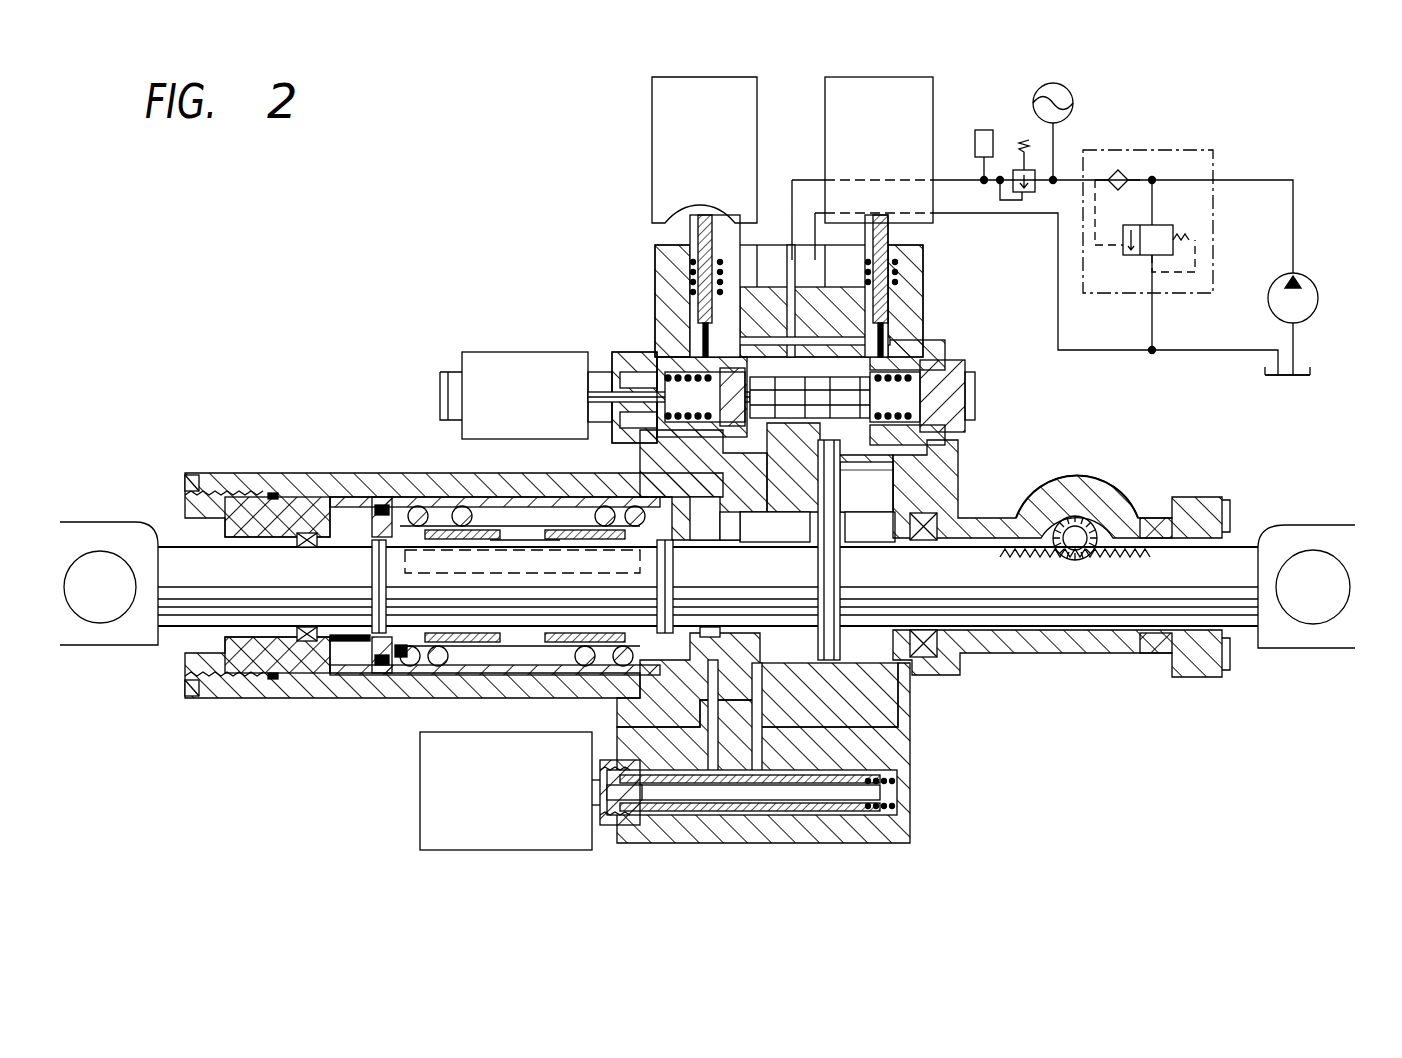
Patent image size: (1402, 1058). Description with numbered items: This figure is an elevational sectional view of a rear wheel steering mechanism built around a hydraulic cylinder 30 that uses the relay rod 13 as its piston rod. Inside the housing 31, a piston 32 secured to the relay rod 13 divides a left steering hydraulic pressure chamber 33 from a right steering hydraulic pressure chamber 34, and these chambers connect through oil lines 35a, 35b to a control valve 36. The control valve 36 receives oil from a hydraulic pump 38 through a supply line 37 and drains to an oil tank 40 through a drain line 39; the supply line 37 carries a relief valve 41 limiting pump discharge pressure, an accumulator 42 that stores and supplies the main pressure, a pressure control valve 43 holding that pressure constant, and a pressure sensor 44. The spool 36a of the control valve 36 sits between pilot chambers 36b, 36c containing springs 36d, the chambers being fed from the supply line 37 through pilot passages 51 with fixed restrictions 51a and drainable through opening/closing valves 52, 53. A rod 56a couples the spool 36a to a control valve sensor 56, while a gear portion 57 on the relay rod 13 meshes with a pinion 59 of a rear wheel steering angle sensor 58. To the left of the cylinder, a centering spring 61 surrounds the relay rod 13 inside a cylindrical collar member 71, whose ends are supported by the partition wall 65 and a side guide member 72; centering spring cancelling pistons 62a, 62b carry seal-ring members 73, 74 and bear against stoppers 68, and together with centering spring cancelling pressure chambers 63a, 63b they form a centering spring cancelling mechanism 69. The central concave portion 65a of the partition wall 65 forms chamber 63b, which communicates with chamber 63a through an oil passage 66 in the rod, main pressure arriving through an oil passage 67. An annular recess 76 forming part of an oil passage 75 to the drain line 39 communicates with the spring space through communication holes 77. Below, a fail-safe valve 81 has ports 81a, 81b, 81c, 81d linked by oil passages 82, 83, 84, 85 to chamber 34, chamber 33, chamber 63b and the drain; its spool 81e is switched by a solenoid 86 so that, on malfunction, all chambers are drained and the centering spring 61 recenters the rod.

The relay rod 13 is at (990, 640).
The hydraulic cylinder 30 is at (925, 680).
The housing 31 is at (985, 525).
The piston 32 is at (842, 560).
The left steering hydraulic pressure chamber 33 is at (775, 526).
The right steering hydraulic pressure chamber 34 is at (870, 526).
The oil line 35a is at (772, 492).
The oil line 35b is at (918, 468).
The control valve 36 is at (915, 355).
The spool 36a is at (935, 392).
The pilot chamber 36b is at (680, 357).
The pilot chamber 36c is at (960, 410).
The springs 36d is at (640, 340).
The supply line 37 is at (775, 255).
The hydraulic pump 38 is at (1313, 308).
The drain line 39 is at (808, 240).
The oil tank 40 is at (1298, 378).
The relief valve 41 is at (1150, 145).
The accumulator 42 is at (1072, 98).
The pressure control valve 43 is at (1030, 165).
The pressure sensor 44 is at (985, 140).
The pilot passages 51 is at (700, 230).
The fixed restrictions 51a is at (690, 310).
The opening/closing valve 52 is at (650, 192).
The opening/closing valve 53 is at (938, 105).
The control valve sensor 56 is at (488, 352).
The rod 56a is at (602, 372).
The gear portion 57 is at (1125, 515).
The rear wheel steering angle sensor 58 is at (1068, 500).
The pinion 59 is at (1080, 525).
The centering spring 61 is at (405, 500).
The centering spring cancelling piston 62a is at (430, 532).
The centering spring cancelling piston 62b is at (600, 535).
The centering spring cancelling pressure chamber 63a is at (365, 538).
The centering spring cancelling pressure chamber 63b is at (710, 540).
The partition wall 65 is at (770, 540).
The central concave portion 65a is at (718, 632).
The oil passage 66 is at (500, 680).
The oil passage 67 is at (820, 462).
The stoppers 68 is at (340, 680).
The centering spring cancelling mechanism 69 is at (385, 675).
The collar member 71 is at (492, 500).
The side guide member 72 is at (312, 497).
The seal-ring members 73 is at (372, 495).
The seal-ring members 74 is at (640, 600).
The oil passage 75 is at (612, 395).
The annular recess 76 is at (640, 500).
The communication holes 77 is at (560, 500).
The fail-safe valve 81 is at (780, 830).
The port 81a is at (815, 815).
The port 81b is at (770, 815).
The port 81c is at (712, 815).
The port 81d is at (665, 815).
The spool 81e is at (880, 820).
The oil passage 82 is at (912, 730).
The oil passage 83 is at (765, 715).
The oil passage 84 is at (718, 760).
The oil passage 85 is at (605, 780).
The solenoid 86 is at (570, 850).